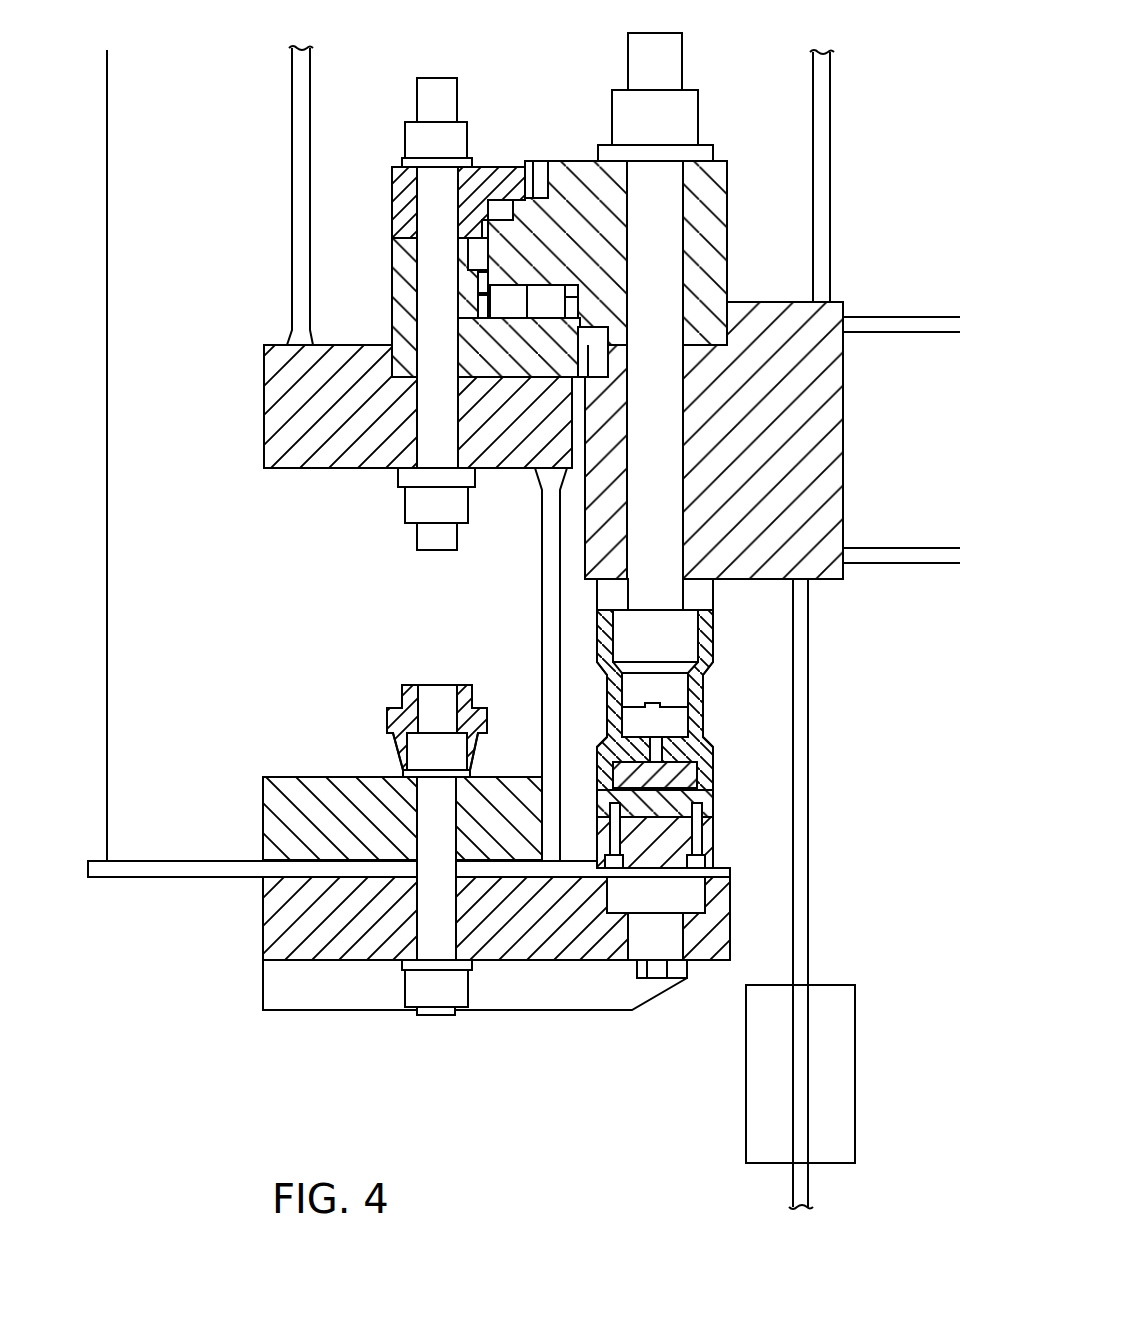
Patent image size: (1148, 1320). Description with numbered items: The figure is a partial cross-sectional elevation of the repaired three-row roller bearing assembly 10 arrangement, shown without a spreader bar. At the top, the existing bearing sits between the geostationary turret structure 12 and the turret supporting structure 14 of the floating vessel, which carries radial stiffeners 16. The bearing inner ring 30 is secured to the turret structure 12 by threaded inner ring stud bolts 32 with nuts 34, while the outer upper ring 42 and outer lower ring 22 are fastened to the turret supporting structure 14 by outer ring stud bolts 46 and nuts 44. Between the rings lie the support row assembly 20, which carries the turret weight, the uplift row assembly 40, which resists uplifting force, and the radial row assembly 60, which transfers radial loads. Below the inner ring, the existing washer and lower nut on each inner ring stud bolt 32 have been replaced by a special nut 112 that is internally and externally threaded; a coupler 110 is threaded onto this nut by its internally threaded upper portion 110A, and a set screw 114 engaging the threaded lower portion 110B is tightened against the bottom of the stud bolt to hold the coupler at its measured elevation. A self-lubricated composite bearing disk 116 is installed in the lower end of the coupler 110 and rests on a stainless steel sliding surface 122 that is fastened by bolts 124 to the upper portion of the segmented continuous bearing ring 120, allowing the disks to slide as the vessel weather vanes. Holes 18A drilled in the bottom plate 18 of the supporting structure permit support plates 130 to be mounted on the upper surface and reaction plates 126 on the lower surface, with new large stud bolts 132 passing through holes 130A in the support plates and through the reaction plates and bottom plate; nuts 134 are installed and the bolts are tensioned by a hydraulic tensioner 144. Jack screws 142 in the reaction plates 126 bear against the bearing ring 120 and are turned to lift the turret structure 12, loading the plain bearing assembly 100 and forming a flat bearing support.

The three-row roller bearing assembly 10 is at (256, 70).
The turret structure 12 is at (837, 472).
The turret supporting structure 14 is at (272, 425).
The radial stiffeners 16 is at (130, 584).
The bottom plate 18 is at (242, 858).
The holes 18A is at (437, 868).
The support row assembly 20 is at (575, 305).
The outer lower ring 22 is at (393, 312).
The bearing inner ring 30 is at (720, 204).
The inner ring stud bolts 32 is at (663, 57).
The nuts 34 is at (683, 112).
The uplift row assembly 40 is at (501, 192).
The outer upper ring 42 is at (403, 189).
The nuts 44 is at (418, 137).
The outer ring stud bolts 46 is at (430, 541).
The radial row assembly 60 is at (466, 260).
The plain bearing assembly 100 is at (660, 756).
The coupler 110 is at (708, 663).
The upper portion of coupler 110A is at (628, 633).
The lower portion of coupler 110B is at (633, 710).
The special nut 112 is at (690, 638).
The set screw 114 is at (672, 690).
The bearing disk 116 is at (690, 764).
The bearing ring 120 is at (710, 847).
The sliding surface 122 is at (703, 805).
The bolts 124 is at (708, 860).
The reaction plates 126 is at (270, 932).
The support plates 130 is at (270, 793).
The holes 130A is at (430, 812).
The large stud bolts 132 is at (432, 1017).
The nuts 134 is at (416, 986).
The jack screws 142 is at (660, 942).
The hydraulic tensioner 144 is at (390, 713).